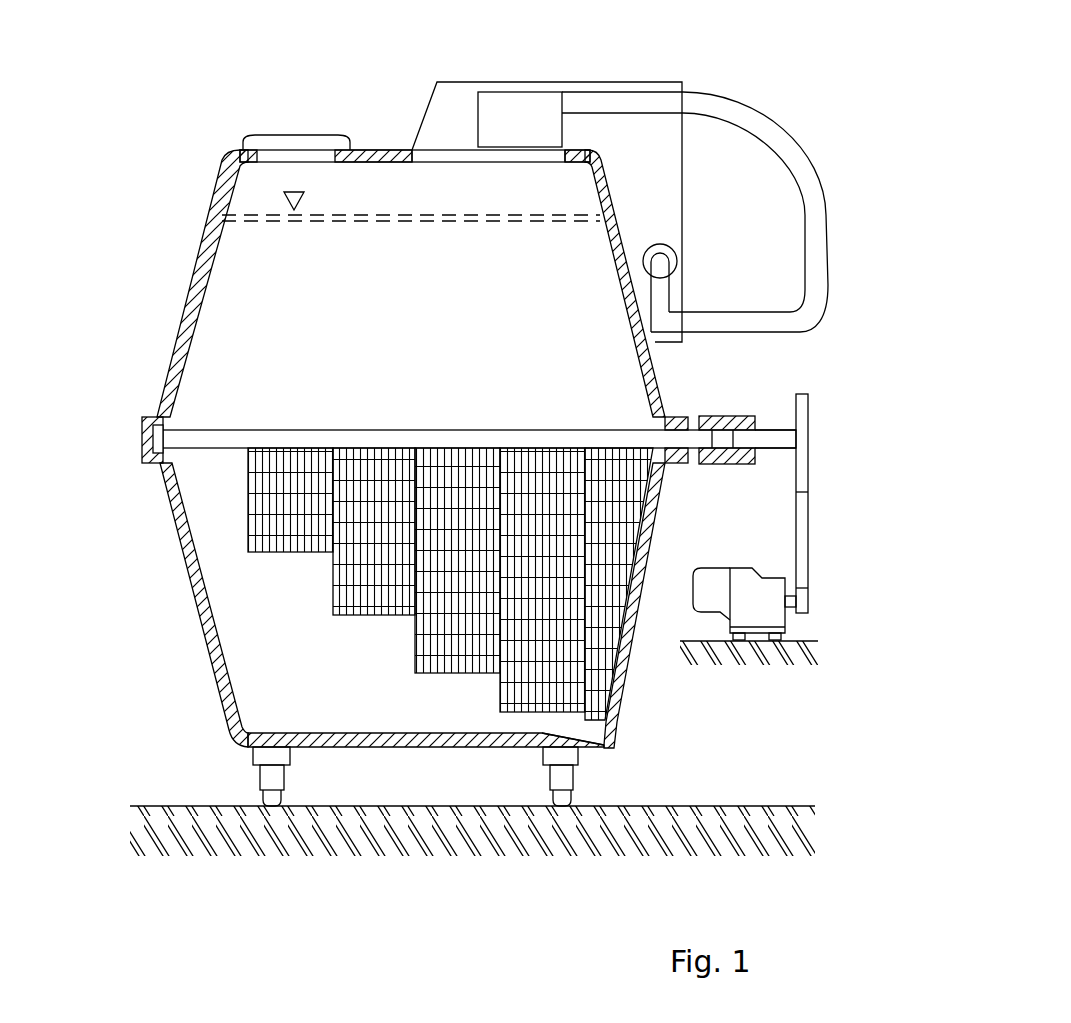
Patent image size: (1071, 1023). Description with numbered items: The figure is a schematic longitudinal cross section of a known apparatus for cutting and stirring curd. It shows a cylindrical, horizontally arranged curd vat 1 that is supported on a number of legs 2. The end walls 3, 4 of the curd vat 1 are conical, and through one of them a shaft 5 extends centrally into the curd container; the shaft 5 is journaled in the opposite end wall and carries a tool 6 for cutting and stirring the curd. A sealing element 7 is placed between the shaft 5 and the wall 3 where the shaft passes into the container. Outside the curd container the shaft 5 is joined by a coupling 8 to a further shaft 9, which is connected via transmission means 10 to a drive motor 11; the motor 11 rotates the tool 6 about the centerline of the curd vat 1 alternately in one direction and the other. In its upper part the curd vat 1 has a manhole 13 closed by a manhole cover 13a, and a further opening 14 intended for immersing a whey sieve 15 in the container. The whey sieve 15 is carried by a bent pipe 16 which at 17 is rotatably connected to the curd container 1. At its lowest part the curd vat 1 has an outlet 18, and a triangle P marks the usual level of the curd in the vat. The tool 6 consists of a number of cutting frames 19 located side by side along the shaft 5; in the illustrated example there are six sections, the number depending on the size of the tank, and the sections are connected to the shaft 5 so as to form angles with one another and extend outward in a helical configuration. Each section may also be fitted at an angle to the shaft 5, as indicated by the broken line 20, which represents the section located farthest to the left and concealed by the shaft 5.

The curd vat 1 is at (221, 101).
The legs 2 is at (270, 775).
The end wall 3 is at (664, 379).
The end wall 4 is at (183, 340).
The shaft 5 is at (292, 438).
The tool 6 is at (276, 582).
The sealing element 7 is at (690, 418).
The coupling 8 is at (751, 411).
The shaft 9 is at (780, 440).
The transmission means 10 is at (830, 489).
The drive motor 11 is at (703, 606).
The manhole 13 is at (270, 158).
The manhole cover 13a is at (300, 140).
The opening 14 is at (440, 155).
The whey sieve 15 is at (520, 115).
The bent pipe 16 is at (730, 112).
The rotatable connection 17 is at (677, 254).
The outlet 18 is at (594, 738).
The cutting frames 19 is at (497, 700).
The broken line 20 is at (216, 441).
The triangle P is at (305, 197).